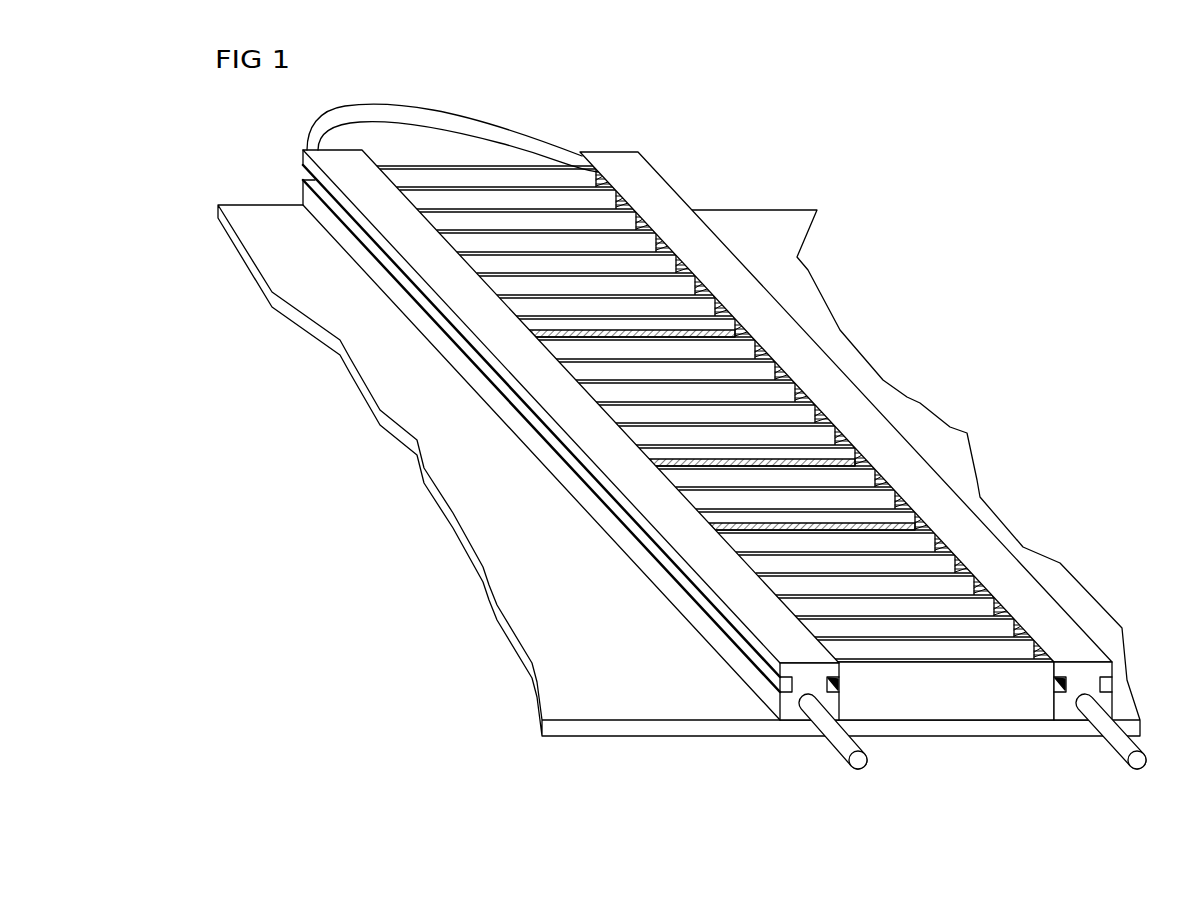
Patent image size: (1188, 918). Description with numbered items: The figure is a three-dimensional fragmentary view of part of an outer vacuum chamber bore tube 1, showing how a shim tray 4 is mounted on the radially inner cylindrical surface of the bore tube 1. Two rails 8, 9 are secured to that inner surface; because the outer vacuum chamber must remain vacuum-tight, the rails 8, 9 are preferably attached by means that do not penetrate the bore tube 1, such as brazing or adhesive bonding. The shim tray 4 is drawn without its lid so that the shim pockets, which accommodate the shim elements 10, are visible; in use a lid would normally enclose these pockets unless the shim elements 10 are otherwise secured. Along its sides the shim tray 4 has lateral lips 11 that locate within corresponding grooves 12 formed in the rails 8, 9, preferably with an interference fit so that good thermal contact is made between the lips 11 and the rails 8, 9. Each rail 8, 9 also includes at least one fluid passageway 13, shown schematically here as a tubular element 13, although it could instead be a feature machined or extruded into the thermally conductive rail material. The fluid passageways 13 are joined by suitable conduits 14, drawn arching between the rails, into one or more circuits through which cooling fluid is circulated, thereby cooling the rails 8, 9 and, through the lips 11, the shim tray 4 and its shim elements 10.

The outer vacuum chamber bore tube 1 is at (847, 340).
The shim tray 4 is at (946, 707).
The rail 8 is at (678, 545).
The rail 9 is at (985, 532).
The shim elements 10 is at (732, 313).
The lateral lips 11 is at (835, 683).
The grooves 12 is at (700, 600).
The fluid passageway 13 is at (837, 745).
The conduits 14 is at (530, 138).